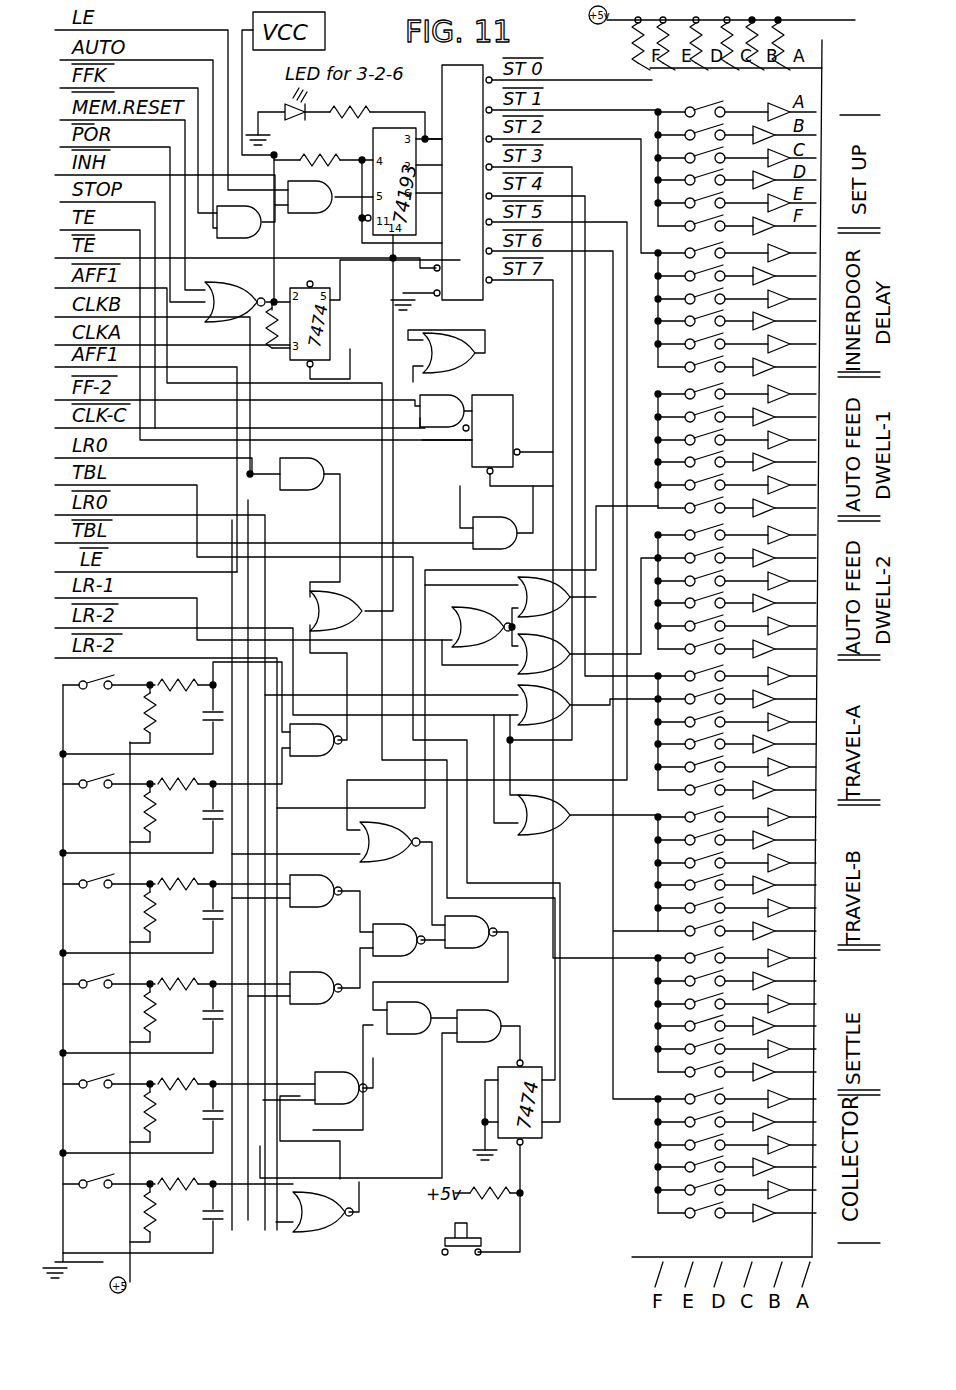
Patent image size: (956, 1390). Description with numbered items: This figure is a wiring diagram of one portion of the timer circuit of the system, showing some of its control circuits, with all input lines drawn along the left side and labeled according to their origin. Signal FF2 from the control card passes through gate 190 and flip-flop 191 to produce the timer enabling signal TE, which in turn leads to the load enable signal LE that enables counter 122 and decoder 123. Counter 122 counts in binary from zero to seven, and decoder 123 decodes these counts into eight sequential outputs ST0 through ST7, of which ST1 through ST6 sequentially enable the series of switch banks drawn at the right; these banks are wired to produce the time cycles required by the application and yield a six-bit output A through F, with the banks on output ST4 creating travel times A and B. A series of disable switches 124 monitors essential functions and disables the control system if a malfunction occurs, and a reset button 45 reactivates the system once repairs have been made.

The counter 122 is at (375, 142).
The decoder 123 is at (442, 94).
The disable switches 124 is at (122, 954).
The gate 190 is at (442, 411).
The flip-flop 191 is at (500, 395).
The reset button 45 is at (485, 1270).